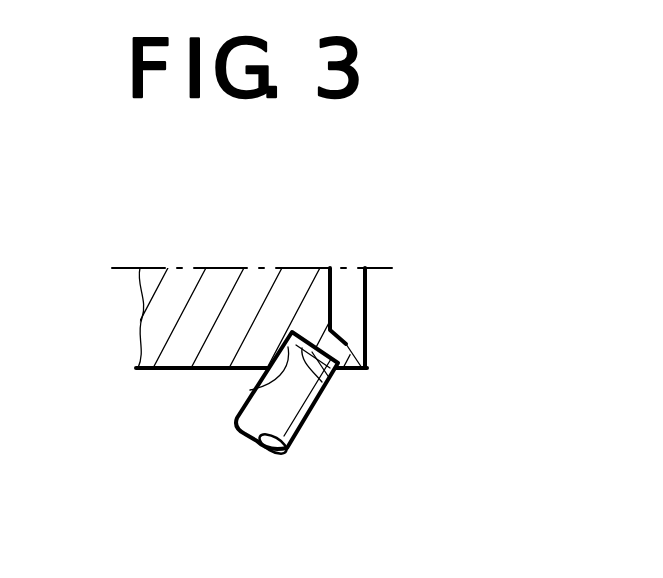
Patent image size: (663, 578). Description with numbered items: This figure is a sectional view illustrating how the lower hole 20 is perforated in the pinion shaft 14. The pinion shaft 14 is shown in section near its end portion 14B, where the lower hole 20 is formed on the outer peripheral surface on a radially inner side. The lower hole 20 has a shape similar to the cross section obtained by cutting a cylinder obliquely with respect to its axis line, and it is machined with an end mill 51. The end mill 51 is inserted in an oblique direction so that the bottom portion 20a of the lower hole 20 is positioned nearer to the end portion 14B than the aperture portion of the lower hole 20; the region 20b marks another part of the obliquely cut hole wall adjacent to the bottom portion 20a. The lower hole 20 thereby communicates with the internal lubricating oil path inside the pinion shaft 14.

The pinion shaft 14 is at (247, 292).
The end portion 14B is at (367, 333).
The lower hole 20 is at (318, 412).
The bottom portion 20a is at (332, 392).
The cut surface of pin 20b is at (250, 390).
The end mill 51 is at (264, 455).